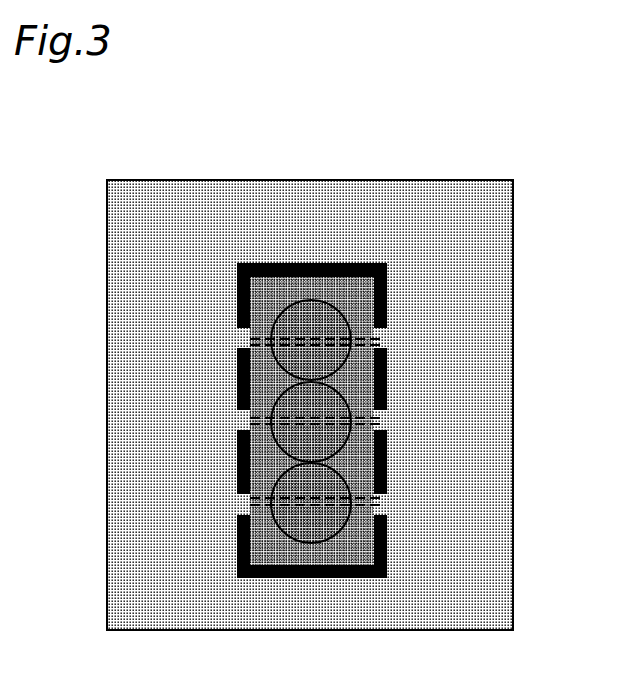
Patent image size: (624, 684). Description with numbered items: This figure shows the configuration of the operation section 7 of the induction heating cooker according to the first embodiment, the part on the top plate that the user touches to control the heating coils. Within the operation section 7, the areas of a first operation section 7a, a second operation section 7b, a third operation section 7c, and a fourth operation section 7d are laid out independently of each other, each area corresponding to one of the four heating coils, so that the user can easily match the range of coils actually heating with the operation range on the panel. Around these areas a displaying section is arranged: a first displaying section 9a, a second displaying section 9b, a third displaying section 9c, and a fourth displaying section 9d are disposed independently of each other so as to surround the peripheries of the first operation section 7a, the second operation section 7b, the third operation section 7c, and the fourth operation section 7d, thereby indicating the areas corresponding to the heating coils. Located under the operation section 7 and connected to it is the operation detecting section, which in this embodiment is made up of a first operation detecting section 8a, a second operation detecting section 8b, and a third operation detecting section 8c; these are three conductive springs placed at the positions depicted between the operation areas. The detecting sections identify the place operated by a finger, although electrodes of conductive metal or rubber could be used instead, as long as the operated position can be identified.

The operation section 7 is at (125, 131).
The first operation section 7a is at (358, 308).
The second operation section 7b is at (358, 382).
The third operation section 7c is at (358, 465).
The fourth operation section 7d is at (358, 540).
The first operation detecting section 8a is at (250, 340).
The second operation detecting section 8b is at (250, 420).
The third operation detecting section 8c is at (250, 501).
The first displaying section 9a is at (237, 290).
The second displaying section 9b is at (237, 379).
The third displaying section 9c is at (237, 468).
The fourth displaying section 9d is at (237, 553).